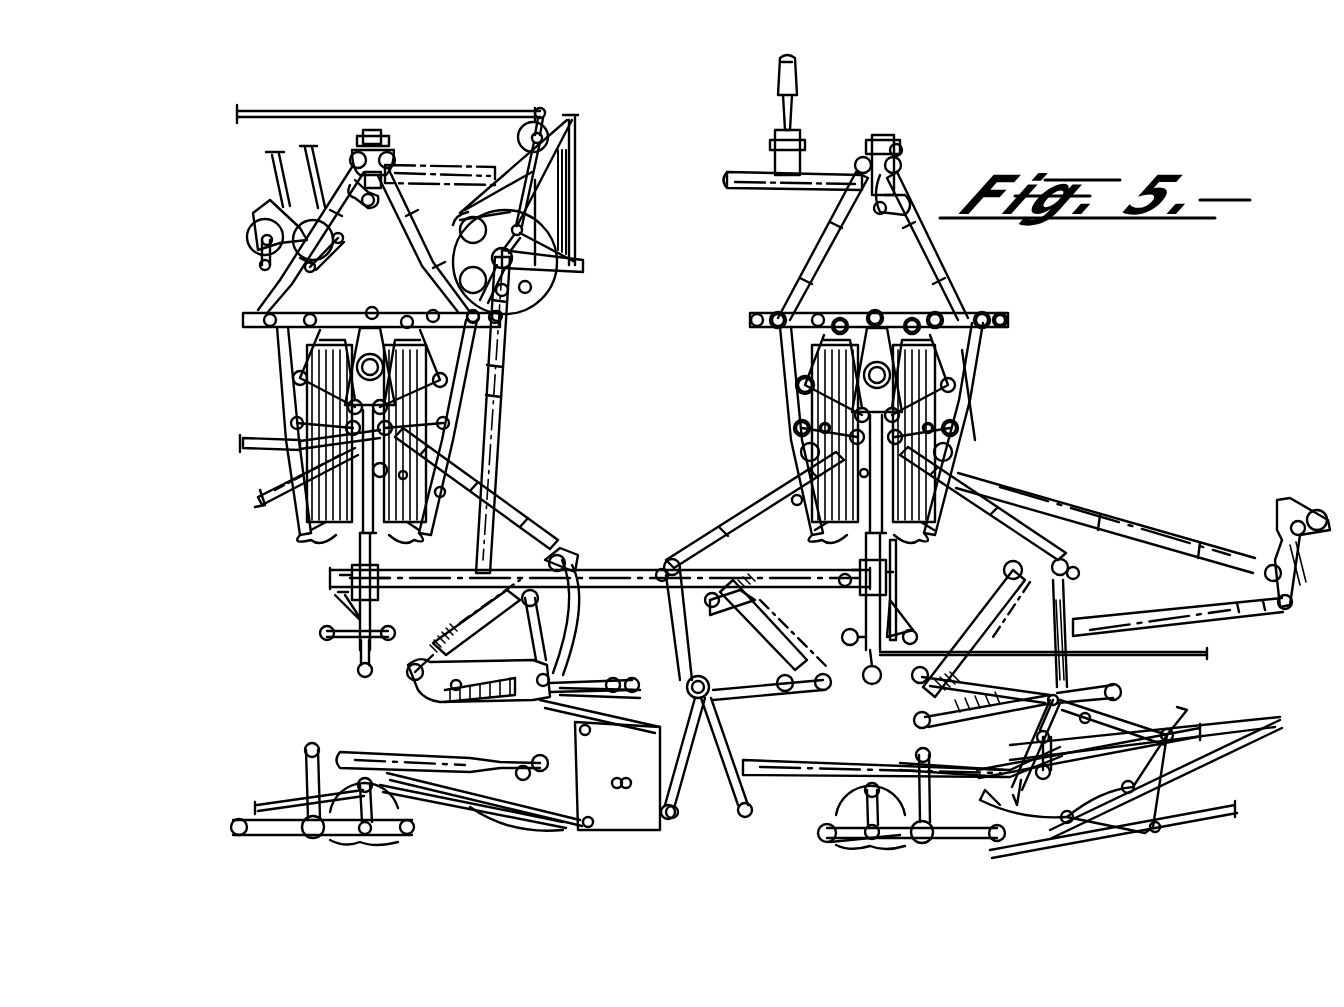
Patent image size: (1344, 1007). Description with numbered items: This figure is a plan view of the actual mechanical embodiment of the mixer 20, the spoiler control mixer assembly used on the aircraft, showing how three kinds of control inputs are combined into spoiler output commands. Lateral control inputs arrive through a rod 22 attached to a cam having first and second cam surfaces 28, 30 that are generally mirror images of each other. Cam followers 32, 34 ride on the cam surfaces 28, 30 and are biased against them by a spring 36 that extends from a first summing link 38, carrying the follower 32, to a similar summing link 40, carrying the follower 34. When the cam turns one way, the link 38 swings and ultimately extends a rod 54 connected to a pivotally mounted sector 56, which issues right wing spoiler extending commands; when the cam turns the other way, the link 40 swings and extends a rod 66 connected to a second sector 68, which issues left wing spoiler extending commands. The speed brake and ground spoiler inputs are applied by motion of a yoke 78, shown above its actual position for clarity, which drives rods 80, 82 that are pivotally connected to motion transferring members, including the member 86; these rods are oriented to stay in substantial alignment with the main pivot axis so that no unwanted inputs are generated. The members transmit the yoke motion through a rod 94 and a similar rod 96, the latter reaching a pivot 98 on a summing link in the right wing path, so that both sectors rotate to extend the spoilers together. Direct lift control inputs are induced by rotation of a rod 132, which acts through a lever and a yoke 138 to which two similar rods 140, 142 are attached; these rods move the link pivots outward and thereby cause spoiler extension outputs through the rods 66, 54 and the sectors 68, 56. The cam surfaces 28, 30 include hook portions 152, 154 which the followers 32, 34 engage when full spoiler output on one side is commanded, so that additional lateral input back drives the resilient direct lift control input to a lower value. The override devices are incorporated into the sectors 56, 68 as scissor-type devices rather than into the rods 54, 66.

The mixer 20 is at (255, 375).
The rod 22 is at (278, 505).
The first cam surface 28 is at (965, 462).
The second cam surface 30 is at (815, 462).
The cam follower 32 is at (960, 430).
The cam follower 34 is at (794, 430).
The spring 36 is at (800, 450).
The first summing link 38 is at (978, 382).
The summing link 40 is at (790, 402).
The rod 54 is at (965, 487).
The sector 56 is at (515, 738).
The rod 66 is at (740, 512).
The second sector 68 is at (720, 727).
The yoke 78 is at (868, 318).
The rod 80 is at (848, 312).
The rod 82 is at (905, 312).
The motion transferring member 86 is at (928, 318).
The rod 94 is at (785, 300).
The rod 96 is at (970, 300).
The pivot 98 is at (995, 316).
The rod 132 is at (412, 168).
The yoke 138 is at (895, 148).
The rod 140 is at (808, 248).
The rod 142 is at (950, 250).
The hook portion 152 is at (455, 530).
The hook portion 154 is at (305, 532).